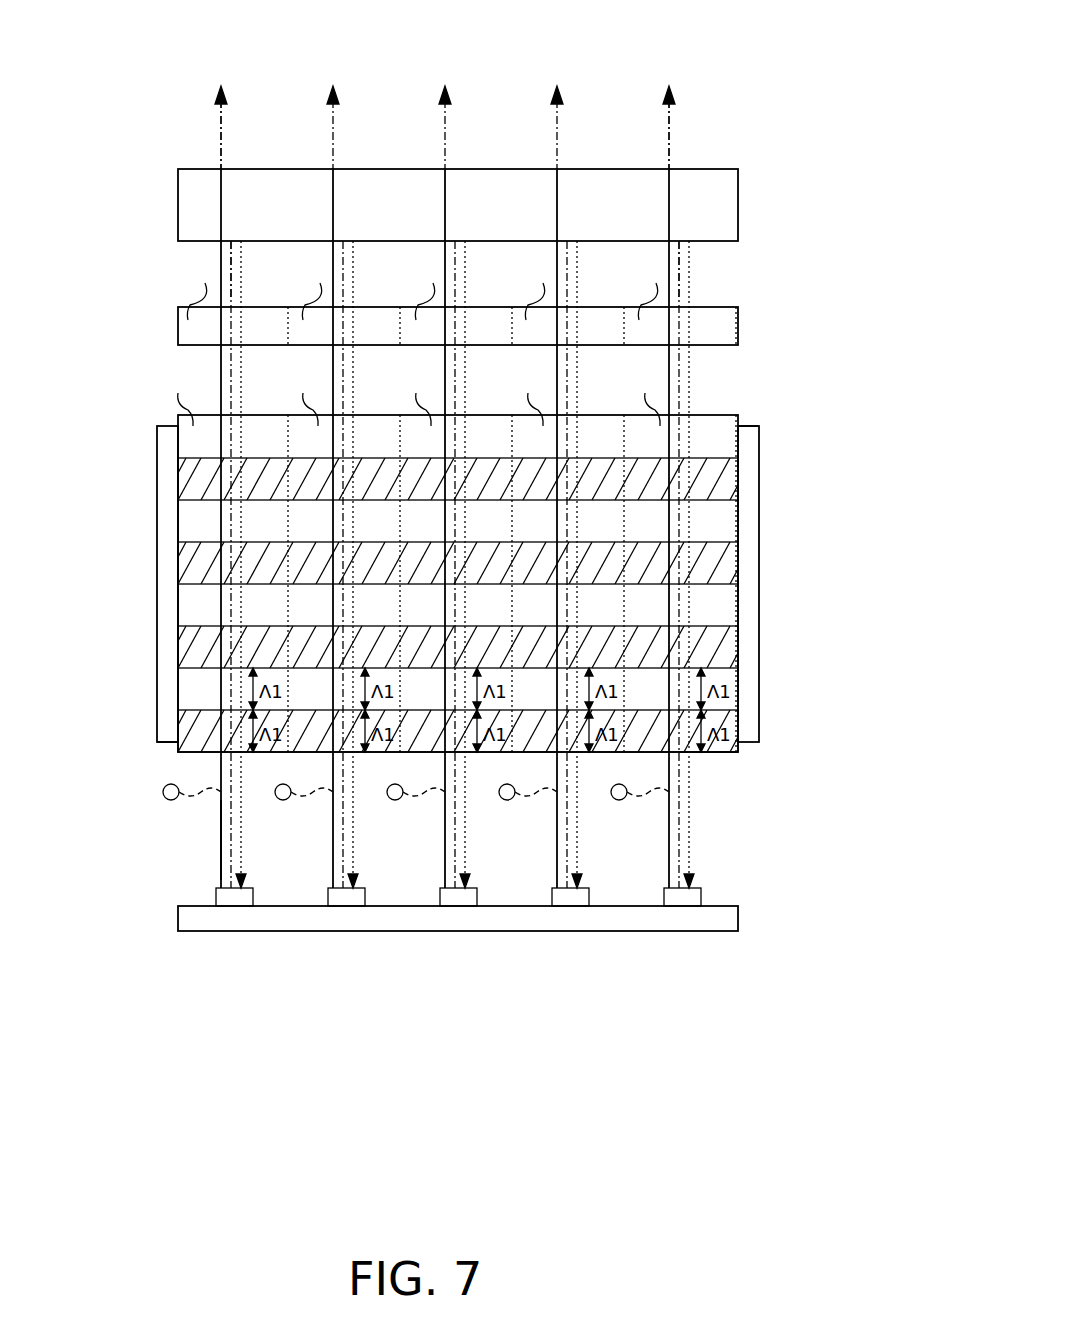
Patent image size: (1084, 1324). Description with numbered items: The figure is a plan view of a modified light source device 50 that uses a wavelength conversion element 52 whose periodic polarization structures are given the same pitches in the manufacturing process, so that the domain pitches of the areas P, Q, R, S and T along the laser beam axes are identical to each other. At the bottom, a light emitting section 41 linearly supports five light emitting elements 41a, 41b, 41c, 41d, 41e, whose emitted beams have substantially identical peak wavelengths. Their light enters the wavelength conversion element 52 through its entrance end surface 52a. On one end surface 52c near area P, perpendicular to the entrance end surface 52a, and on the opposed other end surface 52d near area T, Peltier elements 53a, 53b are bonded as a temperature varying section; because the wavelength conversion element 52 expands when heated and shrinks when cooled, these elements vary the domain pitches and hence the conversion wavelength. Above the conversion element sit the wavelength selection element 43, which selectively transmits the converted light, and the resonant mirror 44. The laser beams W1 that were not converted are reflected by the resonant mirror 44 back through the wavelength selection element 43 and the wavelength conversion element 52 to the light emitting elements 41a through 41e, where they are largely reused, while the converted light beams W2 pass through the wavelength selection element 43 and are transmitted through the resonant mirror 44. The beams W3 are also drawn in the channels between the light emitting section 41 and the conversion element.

The light source device 50 is at (724, 68).
The resonant mirror 44 is at (738, 196).
The wavelength selection element 43 is at (738, 334).
The wavelength conversion element 52 is at (736, 418).
The entrance end surface 52a is at (718, 756).
The one end surface 52c is at (175, 727).
The other end surface 52d is at (742, 446).
The Peltier element 53a is at (166, 640).
The Peltier element 53b is at (752, 658).
The light emitting section 41 is at (158, 916).
The light emitting element 41a is at (249, 896).
The light emitting element 41b is at (361, 896).
The light emitting element 41c is at (473, 896).
The light emitting element 41d is at (585, 896).
The light emitting element 41e is at (697, 896).
The laser beams W1 is at (243, 257).
The light beams W2 is at (218, 130).
The light wave W3 is at (220, 846).